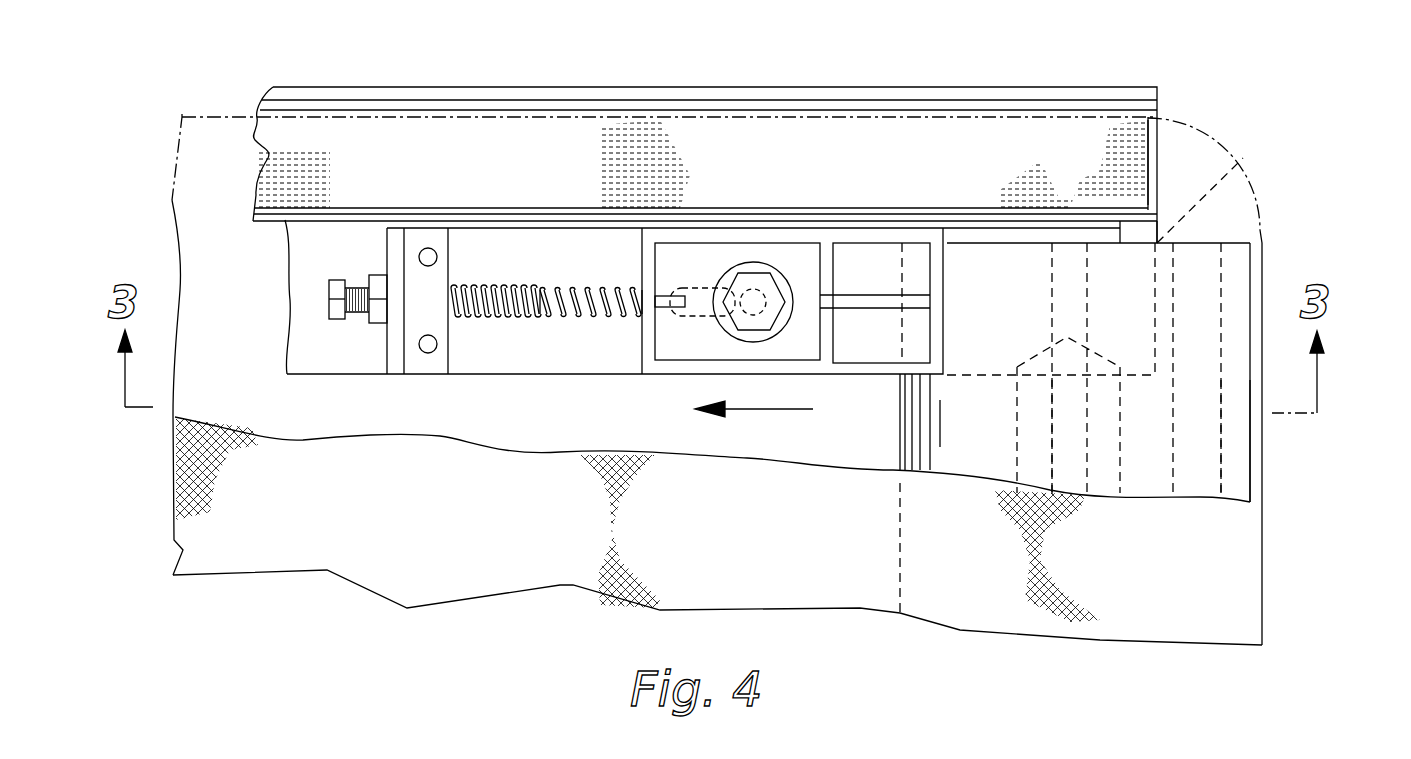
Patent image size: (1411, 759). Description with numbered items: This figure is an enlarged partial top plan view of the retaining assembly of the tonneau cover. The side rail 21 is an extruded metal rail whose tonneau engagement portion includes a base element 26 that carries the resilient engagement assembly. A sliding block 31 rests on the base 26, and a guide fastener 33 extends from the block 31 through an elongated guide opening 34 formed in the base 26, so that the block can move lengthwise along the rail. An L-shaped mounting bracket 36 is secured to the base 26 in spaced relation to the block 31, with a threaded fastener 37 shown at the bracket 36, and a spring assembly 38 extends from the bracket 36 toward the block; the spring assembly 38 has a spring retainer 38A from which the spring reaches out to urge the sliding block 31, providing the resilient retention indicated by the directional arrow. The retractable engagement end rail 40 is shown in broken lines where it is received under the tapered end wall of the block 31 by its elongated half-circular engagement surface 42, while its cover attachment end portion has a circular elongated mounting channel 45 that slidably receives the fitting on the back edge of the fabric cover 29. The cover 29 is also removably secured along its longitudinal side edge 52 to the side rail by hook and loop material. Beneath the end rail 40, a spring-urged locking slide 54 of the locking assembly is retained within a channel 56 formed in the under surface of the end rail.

The side rail 21 is at (996, 80).
The base element 26 is at (325, 237).
The fabric cover 29 is at (1237, 218).
The sliding block 31 is at (838, 367).
The guide fastener 33 is at (760, 282).
The elongated guide opening 34 is at (700, 317).
The L-shaped mounting bracket 36 is at (419, 360).
The bolt 37 is at (340, 320).
The spring assembly 38 is at (500, 248).
The spring retainer 38A is at (560, 320).
The retractable engagement end rail 40 is at (1203, 465).
The elongated engagement surface 42 is at (913, 433).
The circular elongated mounting channel 45 is at (1207, 380).
The longitudinal side edge 52 is at (1122, 147).
The spring urged locking slide 54 is at (1103, 458).
The channel 56 is at (1088, 290).